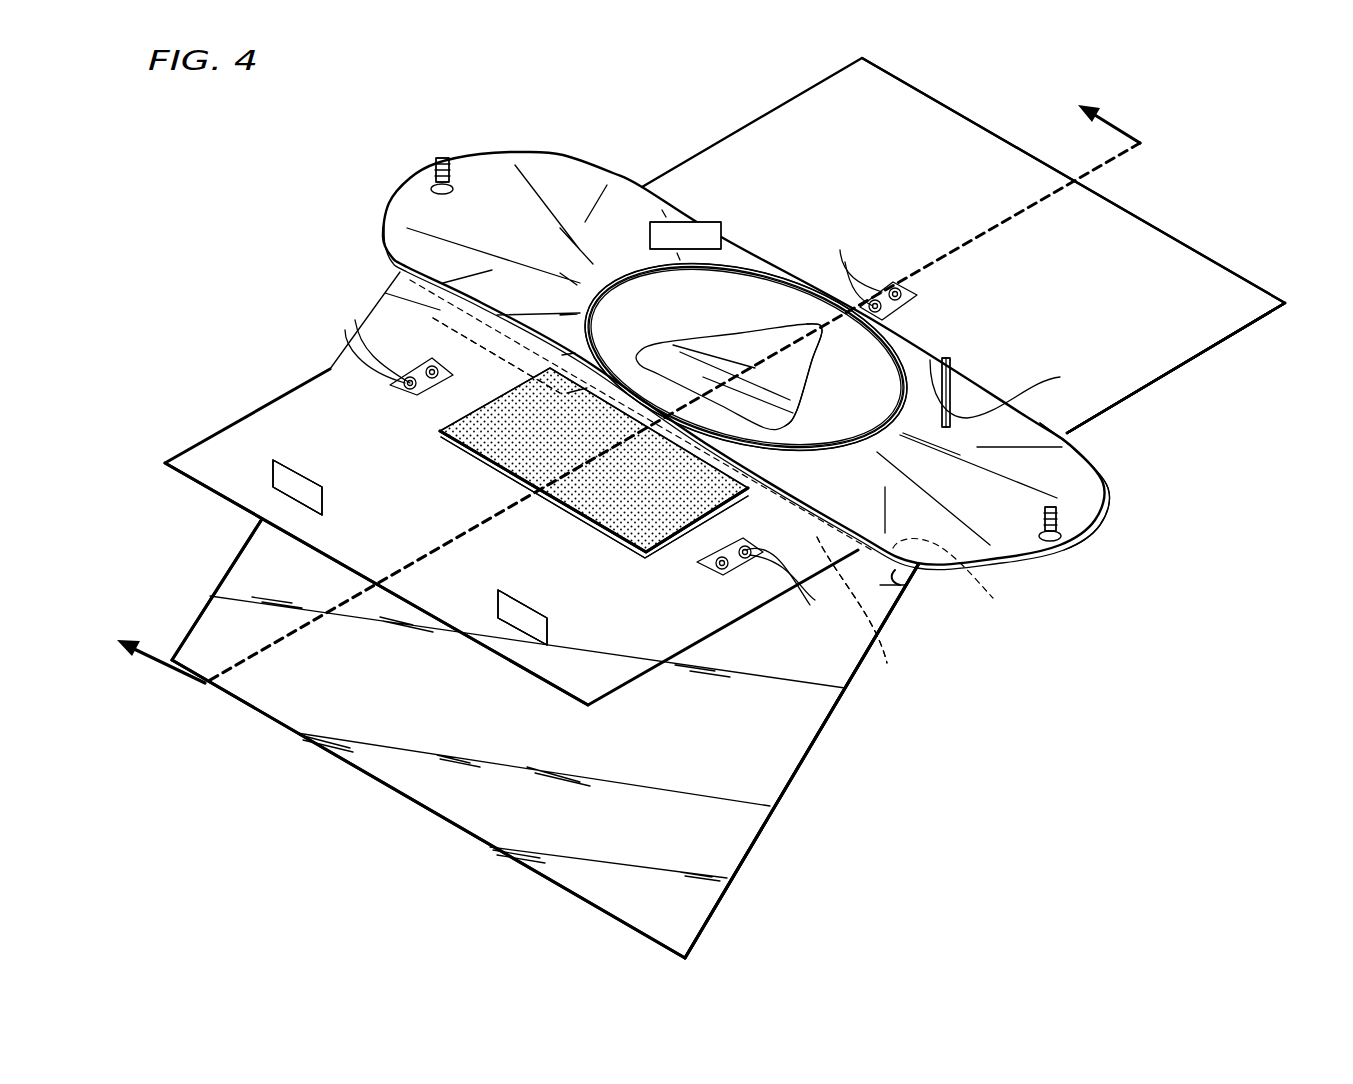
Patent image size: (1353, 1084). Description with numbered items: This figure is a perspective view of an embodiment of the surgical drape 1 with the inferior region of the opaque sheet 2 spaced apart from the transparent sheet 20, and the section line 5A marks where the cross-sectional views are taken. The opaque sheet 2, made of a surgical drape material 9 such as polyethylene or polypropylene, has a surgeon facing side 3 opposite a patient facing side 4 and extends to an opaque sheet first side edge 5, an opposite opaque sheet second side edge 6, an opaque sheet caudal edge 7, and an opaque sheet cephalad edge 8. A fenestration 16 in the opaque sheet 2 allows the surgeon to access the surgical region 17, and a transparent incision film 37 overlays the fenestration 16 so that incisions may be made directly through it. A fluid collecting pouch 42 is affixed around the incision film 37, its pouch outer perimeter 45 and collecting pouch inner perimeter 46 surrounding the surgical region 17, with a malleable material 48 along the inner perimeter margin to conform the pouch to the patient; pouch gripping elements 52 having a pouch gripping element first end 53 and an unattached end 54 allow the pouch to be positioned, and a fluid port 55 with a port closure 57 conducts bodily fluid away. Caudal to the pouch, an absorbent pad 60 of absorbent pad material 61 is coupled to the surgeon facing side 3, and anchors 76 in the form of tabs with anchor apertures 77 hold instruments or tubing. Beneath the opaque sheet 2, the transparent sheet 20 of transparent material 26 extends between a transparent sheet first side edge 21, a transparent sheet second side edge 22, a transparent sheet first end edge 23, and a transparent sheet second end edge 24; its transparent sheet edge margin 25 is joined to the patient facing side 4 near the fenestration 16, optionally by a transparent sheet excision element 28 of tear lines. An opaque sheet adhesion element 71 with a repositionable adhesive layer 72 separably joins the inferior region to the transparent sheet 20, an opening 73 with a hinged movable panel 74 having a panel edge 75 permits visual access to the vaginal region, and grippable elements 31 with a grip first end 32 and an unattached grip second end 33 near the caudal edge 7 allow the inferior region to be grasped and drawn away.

The surgical drape 1 is at (1277, 182).
The opaque sheet 2 is at (1205, 360).
The surgeon facing side 3 is at (1176, 368).
The patient facing side 4 is at (1125, 398).
The opaque sheet first side edge 5 is at (330, 364).
The opaque sheet second side edge 6 is at (645, 678).
The opaque sheet caudal edge 7 is at (255, 516).
The opaque sheet cephalad edge 8 is at (944, 103).
The surgical drape material 9 is at (1212, 335).
The fenestration 16 is at (793, 397).
The surgical region 17 is at (708, 334).
The transparent sheet 20 is at (760, 851).
The transparent sheet first side edge 21 is at (196, 612).
The transparent sheet second side edge 22 is at (707, 924).
The transparent sheet first end edge 23 is at (957, 579).
The transparent sheet second end edge 24 is at (376, 782).
The transparent sheet edge margin 25 is at (880, 585).
The transparent material 26 is at (790, 778).
The transparent sheet excision element 28 is at (880, 587).
The grippable elements 31 is at (275, 470).
The grip first end 32 is at (325, 510).
The grip second end 33 is at (310, 475).
The transparent incision film 37 is at (745, 336).
The fluid collecting pouch 42 is at (1125, 482).
The pouch outer perimeter 45 is at (1097, 522).
The collecting pouch inner perimeter 46 is at (898, 403).
The malleable material 48 is at (890, 430).
The pouch gripping elements 52 is at (712, 222).
The pouch gripping element first end 53 is at (947, 378).
The pouch gripping element unattached end 54 is at (722, 236).
The fluid port 55 is at (432, 178).
The port closure 57 is at (443, 158).
The absorbent pad 60 is at (440, 428).
The absorbent pad material 61 is at (594, 460).
The opaque sheet adhesion element 71 is at (868, 618).
The adhesive layer 72 is at (852, 600).
The opening 73 is at (490, 398).
The movable panel 74 is at (662, 550).
The panel edge 75 is at (594, 497).
The anchors 76 is at (434, 380).
The anchor apertures 77 is at (380, 345).
The section line 5A is at (640, 401).